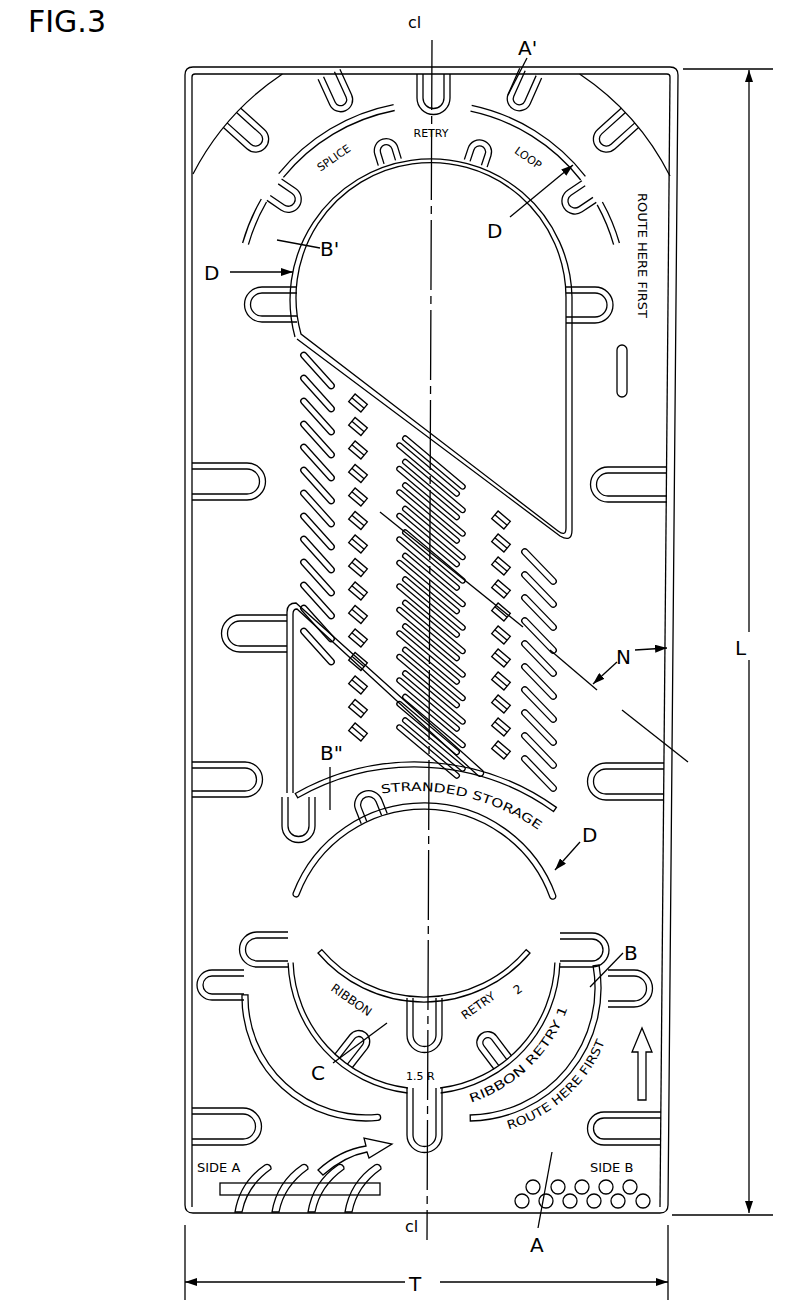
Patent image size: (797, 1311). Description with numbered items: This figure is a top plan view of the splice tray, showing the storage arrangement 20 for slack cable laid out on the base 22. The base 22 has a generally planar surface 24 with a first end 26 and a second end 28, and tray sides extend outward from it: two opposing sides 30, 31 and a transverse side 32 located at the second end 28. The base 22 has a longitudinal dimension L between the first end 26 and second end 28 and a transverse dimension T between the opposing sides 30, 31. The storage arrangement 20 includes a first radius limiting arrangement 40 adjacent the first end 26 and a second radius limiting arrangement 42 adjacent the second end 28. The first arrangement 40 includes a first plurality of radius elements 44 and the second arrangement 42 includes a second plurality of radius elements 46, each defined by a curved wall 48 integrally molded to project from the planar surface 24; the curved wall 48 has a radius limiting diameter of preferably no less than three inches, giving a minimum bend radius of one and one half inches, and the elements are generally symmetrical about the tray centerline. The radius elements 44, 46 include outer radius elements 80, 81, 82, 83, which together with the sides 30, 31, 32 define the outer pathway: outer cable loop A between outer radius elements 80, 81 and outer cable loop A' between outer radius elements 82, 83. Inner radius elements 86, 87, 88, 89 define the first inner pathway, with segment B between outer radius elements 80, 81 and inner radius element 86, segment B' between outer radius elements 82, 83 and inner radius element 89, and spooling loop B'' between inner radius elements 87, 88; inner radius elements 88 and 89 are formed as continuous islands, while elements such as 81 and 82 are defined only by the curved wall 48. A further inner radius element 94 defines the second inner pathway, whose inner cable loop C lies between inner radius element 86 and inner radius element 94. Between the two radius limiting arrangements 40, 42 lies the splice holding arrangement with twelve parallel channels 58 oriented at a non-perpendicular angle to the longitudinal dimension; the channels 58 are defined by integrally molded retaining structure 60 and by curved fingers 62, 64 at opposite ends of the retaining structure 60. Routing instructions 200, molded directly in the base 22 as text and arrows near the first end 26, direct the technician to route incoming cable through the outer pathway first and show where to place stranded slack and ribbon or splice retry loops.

The storage arrangement 20 is at (148, 345).
The base 22 is at (205, 853).
The planar surface 24 is at (635, 628).
The first end 26 is at (468, 1187).
The second end 28 is at (400, 97).
The opposing side 30 is at (185, 567).
The opposing side 31 is at (683, 545).
The transverse side 32 is at (470, 68).
The first radius limiting arrangement 40 is at (215, 1068).
The second radius limiting arrangement 42 is at (205, 232).
The first plurality of radius elements 44 is at (322, 843).
The second plurality of radius elements 46 is at (312, 127).
The curved wall 48 is at (258, 197).
The channels 58 is at (302, 477).
The retaining structure 60 is at (358, 473).
The curved fingers 62 is at (302, 515).
The curved fingers 64 is at (552, 623).
The outer radius element 80 is at (270, 1072).
The outer radius element 81 is at (477, 1123).
The outer radius element 82 is at (297, 140).
The outer radius element 83 is at (603, 187).
The inner radius element 86 is at (380, 1080).
The inner radius element 87 is at (298, 882).
The inner radius element 88 is at (307, 702).
The inner radius element 89 is at (335, 317).
The inner radius element 94 is at (363, 980).
The routing instructions 200 is at (423, 150).